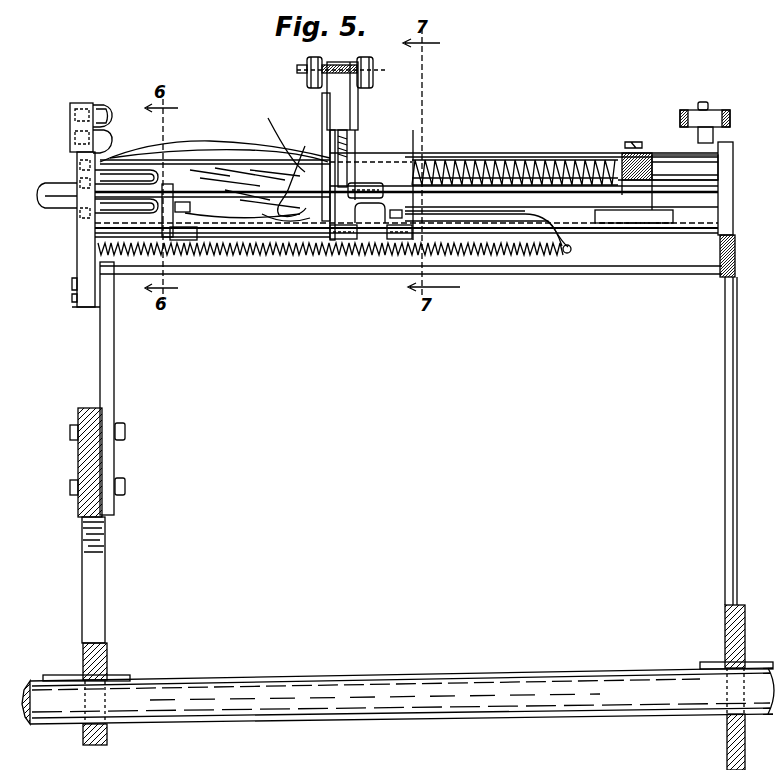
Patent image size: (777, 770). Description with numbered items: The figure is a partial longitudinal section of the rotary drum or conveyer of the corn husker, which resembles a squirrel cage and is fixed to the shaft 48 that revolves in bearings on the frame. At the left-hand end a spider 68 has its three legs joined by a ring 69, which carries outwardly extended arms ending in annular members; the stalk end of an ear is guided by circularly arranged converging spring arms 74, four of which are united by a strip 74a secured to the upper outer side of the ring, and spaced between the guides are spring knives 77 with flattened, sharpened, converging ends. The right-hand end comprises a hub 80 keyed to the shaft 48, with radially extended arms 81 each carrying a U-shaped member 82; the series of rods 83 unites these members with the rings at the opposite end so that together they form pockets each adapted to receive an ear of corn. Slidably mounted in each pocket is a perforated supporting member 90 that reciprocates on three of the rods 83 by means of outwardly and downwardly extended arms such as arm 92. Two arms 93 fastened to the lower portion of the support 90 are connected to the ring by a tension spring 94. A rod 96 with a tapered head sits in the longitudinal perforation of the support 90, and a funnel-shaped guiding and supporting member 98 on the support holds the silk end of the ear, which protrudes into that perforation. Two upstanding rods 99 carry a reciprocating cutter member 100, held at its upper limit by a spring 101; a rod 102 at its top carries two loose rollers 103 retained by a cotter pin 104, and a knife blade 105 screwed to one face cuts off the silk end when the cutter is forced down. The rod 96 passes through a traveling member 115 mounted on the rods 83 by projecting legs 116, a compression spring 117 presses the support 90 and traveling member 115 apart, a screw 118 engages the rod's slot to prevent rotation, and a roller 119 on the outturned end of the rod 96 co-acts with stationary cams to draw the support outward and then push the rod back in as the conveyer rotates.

The shaft 48 is at (207, 681).
The spider 68 is at (98, 611).
The ring 69 is at (78, 457).
The spring arms 74 is at (106, 110).
The strip 74a is at (78, 103).
The spring knives 77 is at (132, 176).
The hub 80 is at (726, 630).
The radially extended arms 81 is at (730, 470).
The U-shaped member 82 is at (728, 183).
The rods 83 is at (206, 162).
The perforated supporting member 90 is at (378, 172).
The arm 92 is at (398, 240).
The arms 93 is at (472, 208).
The tension spring 94 is at (276, 256).
The rod 96 is at (528, 162).
The funnel-shaped guiding and supporting member 98 is at (280, 154).
The upstanding rods 99 is at (350, 140).
The cutter member 100 is at (348, 104).
The spring 101 is at (330, 140).
The rod 102 is at (380, 68).
The loose rollers 103 is at (324, 64).
The cotter pin 104 is at (309, 58).
The knife blade 105 is at (322, 99).
The traveling member 115 is at (627, 200).
The projecting legs 116 is at (637, 223).
The compression spring 117 is at (493, 160).
The screw 118 is at (630, 140).
The roller 119 is at (688, 110).